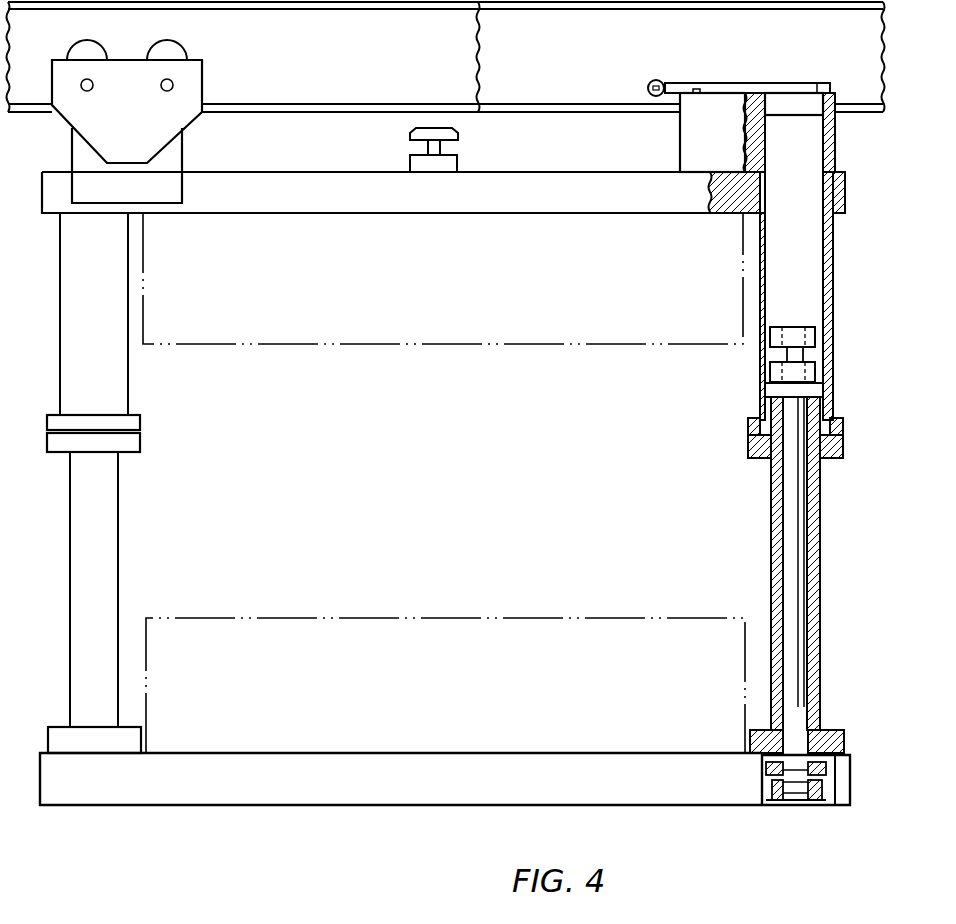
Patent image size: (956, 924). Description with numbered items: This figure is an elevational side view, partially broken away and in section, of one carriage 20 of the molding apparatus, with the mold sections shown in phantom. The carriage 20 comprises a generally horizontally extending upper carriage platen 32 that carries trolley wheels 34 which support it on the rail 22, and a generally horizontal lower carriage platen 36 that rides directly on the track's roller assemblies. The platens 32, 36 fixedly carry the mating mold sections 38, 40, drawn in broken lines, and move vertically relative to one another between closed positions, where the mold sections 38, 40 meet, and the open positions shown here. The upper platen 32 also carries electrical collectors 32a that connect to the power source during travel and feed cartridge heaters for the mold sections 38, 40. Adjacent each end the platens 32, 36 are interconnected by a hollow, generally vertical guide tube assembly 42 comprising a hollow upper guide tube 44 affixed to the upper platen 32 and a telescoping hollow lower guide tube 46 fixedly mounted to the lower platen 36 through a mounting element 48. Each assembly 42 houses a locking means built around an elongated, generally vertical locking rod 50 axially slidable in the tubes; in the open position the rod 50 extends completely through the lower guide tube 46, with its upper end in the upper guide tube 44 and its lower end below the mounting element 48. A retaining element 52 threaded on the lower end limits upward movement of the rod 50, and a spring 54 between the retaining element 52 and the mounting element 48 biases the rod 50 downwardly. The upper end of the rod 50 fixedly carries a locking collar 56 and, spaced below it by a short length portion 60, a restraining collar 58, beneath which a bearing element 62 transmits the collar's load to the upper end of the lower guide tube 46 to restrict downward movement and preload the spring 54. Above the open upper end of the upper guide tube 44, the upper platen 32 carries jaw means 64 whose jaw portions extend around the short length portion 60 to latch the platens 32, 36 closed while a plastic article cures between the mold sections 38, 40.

The carriage 20 is at (536, 169).
The rail 22 is at (398, 54).
The upper carriage platen 32 is at (355, 183).
The electrical collector 32a is at (432, 128).
The trolley wheel 34 is at (176, 57).
The lower carriage platen 36 is at (420, 790).
The mold section 38 is at (508, 336).
The mold section 40 is at (430, 650).
The guide tube assembly 42 is at (190, 456).
The upper guide tube 44 is at (70, 268).
The lower guide tube 46 is at (110, 594).
The mounting element 48 is at (826, 732).
The locking rod 50 is at (790, 606).
The retaining element 52 is at (768, 800).
The spring 54 is at (822, 770).
The locking collar 56 is at (793, 330).
The restraining collar 58 is at (815, 372).
The short length portion 60 is at (806, 355).
The bearing element 62 is at (822, 390).
The jaw means 64 is at (733, 80).